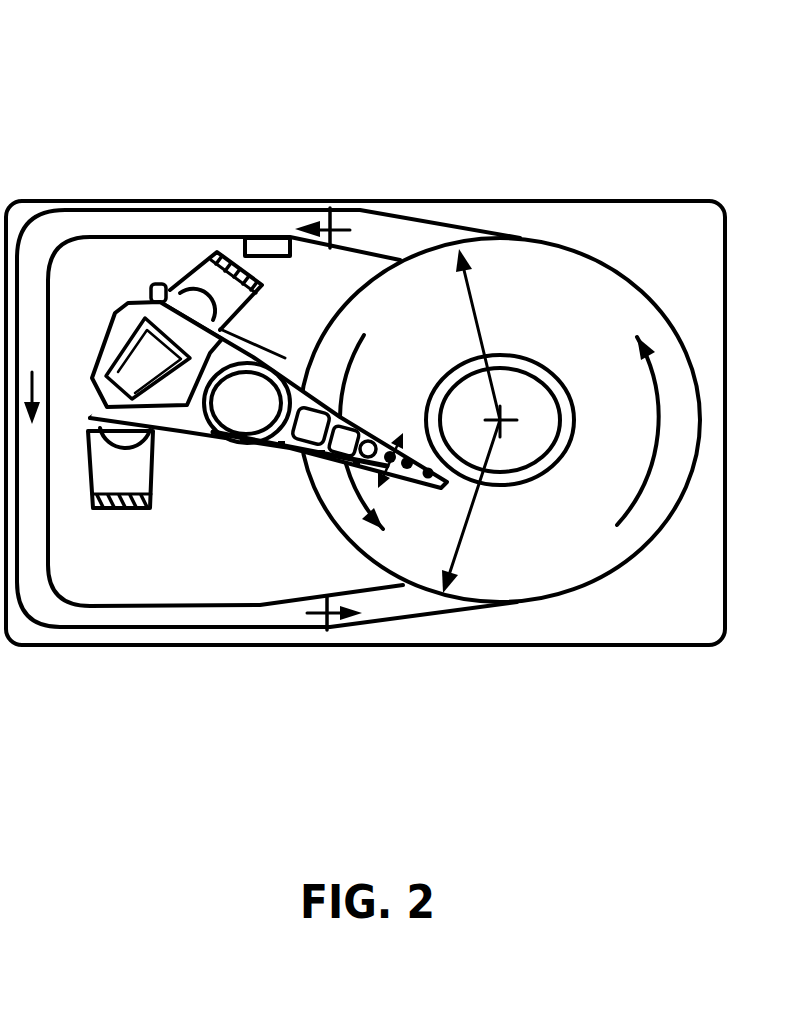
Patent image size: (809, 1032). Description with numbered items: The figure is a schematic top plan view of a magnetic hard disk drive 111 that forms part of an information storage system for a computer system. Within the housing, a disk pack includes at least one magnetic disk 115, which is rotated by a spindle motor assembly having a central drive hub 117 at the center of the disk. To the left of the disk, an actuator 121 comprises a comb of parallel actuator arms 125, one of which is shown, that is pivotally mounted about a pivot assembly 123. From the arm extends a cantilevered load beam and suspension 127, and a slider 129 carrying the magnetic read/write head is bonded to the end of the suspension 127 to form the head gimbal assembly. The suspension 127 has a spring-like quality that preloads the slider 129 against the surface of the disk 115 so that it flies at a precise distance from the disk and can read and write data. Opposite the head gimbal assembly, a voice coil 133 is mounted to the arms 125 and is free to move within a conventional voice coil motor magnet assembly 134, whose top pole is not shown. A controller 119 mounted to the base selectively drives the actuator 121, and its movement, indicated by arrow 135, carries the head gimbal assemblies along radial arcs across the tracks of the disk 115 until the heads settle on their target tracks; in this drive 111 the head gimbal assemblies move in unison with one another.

The hard disk drive 111 is at (694, 88).
The magnetic disk 115 is at (588, 270).
The central drive hub 117 is at (530, 362).
The controller 119 is at (283, 258).
The actuator 121 is at (163, 529).
The pivot assembly 123 is at (233, 442).
The actuator arm 125 is at (305, 383).
The load beam and suspension 127 is at (352, 418).
The slider 129 is at (420, 482).
The voice coil 133 is at (113, 312).
The voice coil motor magnet assembly 134 is at (205, 280).
The arrow indicating actuator movement 135 is at (347, 468).